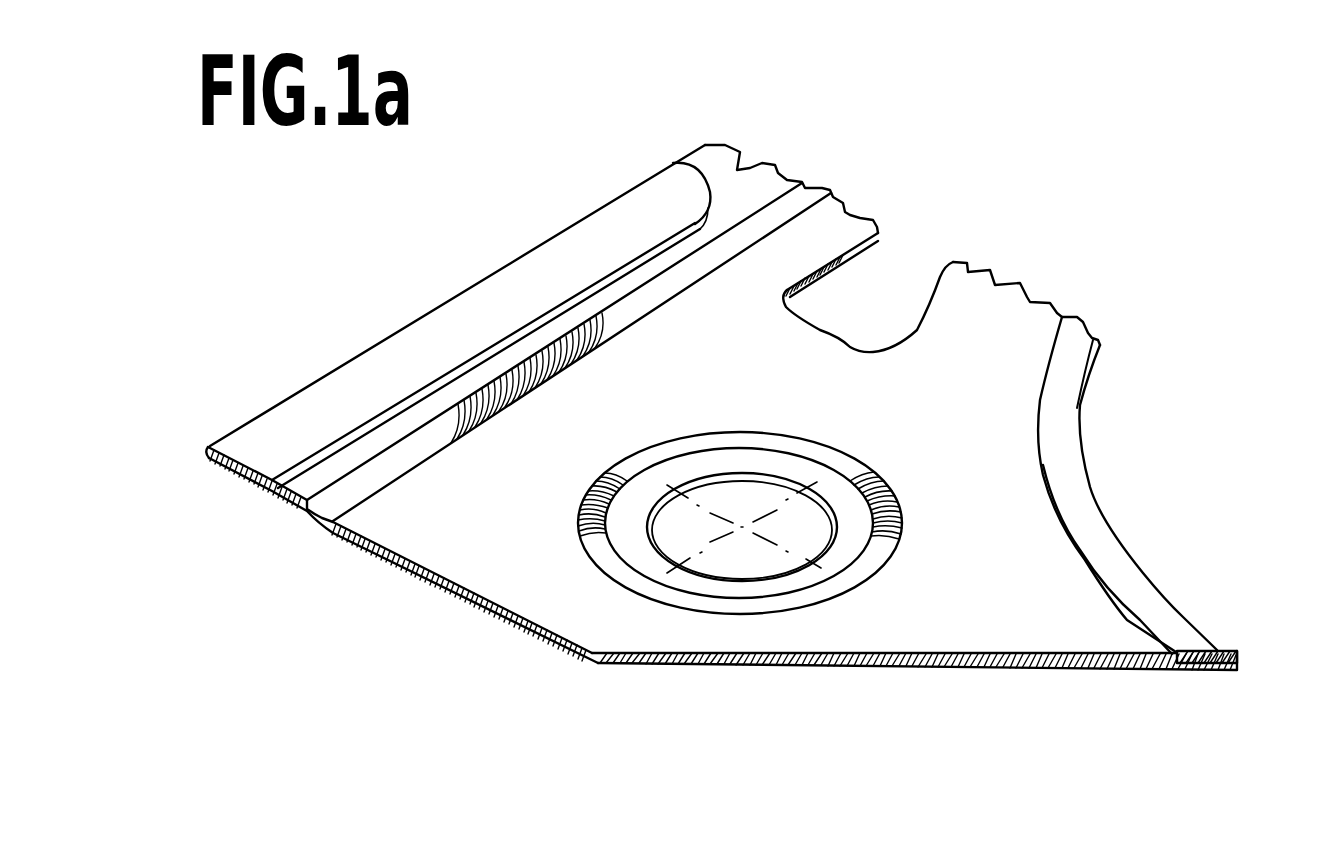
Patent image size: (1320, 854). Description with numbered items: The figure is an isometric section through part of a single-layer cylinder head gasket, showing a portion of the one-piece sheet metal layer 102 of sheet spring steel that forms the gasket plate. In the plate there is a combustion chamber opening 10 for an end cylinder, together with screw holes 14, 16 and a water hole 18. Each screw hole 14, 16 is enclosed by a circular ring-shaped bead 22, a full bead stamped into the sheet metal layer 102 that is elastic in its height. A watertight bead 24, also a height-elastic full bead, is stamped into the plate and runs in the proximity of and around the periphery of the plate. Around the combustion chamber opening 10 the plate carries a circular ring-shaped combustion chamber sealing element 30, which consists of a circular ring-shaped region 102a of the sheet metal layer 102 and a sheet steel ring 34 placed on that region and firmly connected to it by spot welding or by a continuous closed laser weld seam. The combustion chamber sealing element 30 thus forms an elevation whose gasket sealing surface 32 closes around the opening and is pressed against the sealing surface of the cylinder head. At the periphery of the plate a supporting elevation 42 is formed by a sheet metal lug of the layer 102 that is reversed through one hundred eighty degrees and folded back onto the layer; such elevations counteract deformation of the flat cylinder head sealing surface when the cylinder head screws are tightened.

The combustion chamber opening 10 is at (1124, 507).
The screw hole 14 is at (727, 563).
The screw hole 16 is at (742, 527).
The water hole 18 is at (863, 267).
The circular ring-shaped bead 22 is at (865, 562).
The watertight bead 24 is at (382, 477).
The combustion chamber sealing element 30 is at (1035, 330).
The gasket sealing surface 32 is at (1058, 413).
The sheet steel ring 34 is at (1198, 648).
The supporting elevation 42 is at (732, 189).
The sheet metal layer 102 is at (500, 484).
The circular ring-shaped region 102a is at (1210, 672).